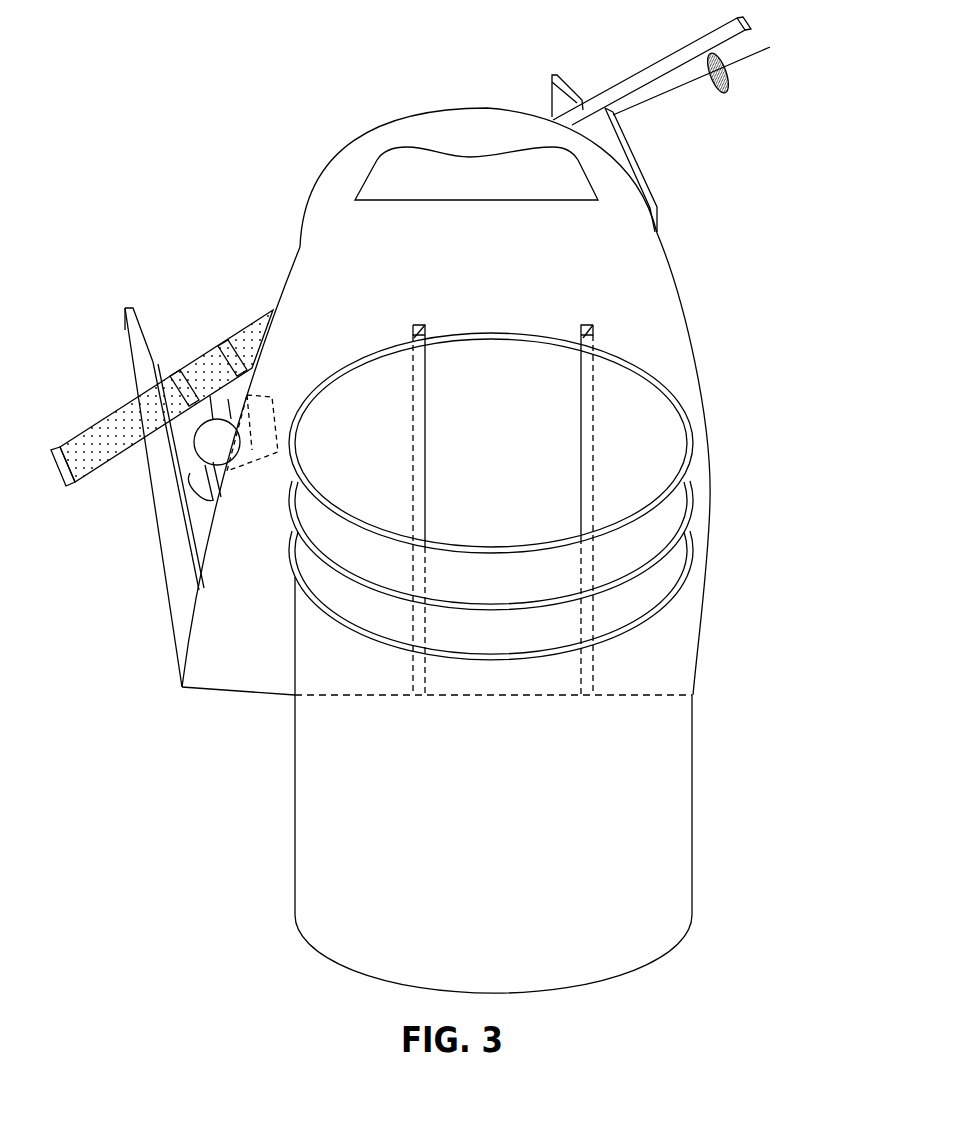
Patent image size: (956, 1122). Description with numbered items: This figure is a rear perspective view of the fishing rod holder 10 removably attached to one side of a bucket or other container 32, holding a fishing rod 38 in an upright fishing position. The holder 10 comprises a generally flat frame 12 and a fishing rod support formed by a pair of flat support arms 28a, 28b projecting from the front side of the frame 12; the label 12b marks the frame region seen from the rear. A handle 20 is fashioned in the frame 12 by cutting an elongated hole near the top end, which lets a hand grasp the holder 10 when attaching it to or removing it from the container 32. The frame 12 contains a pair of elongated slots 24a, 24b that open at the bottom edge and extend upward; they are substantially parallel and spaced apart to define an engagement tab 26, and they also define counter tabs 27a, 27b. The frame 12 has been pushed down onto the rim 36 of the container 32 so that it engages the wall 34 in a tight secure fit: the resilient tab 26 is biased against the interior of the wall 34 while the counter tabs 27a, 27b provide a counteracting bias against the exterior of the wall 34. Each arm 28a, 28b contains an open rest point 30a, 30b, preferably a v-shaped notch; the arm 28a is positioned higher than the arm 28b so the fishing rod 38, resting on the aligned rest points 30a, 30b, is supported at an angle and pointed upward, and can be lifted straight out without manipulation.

The fishing rod holder 10 is at (738, 180).
The frame 12 is at (688, 305).
The upper body portion 12b is at (568, 266).
The handle 20 is at (467, 133).
The elongated slot 24a is at (588, 325).
The elongated slot 24b is at (421, 322).
The engagement tab 26 is at (513, 423).
The counter tab 27a is at (688, 373).
The counter tab 27b is at (272, 576).
The support arm 28a is at (621, 159).
The support arm 28b is at (180, 548).
The open rest point 30a is at (582, 98).
The open rest point 30b is at (155, 358).
The container 32 is at (297, 800).
The wall 34 is at (379, 829).
The rim 36 is at (507, 550).
The fishing rod 38 is at (237, 322).